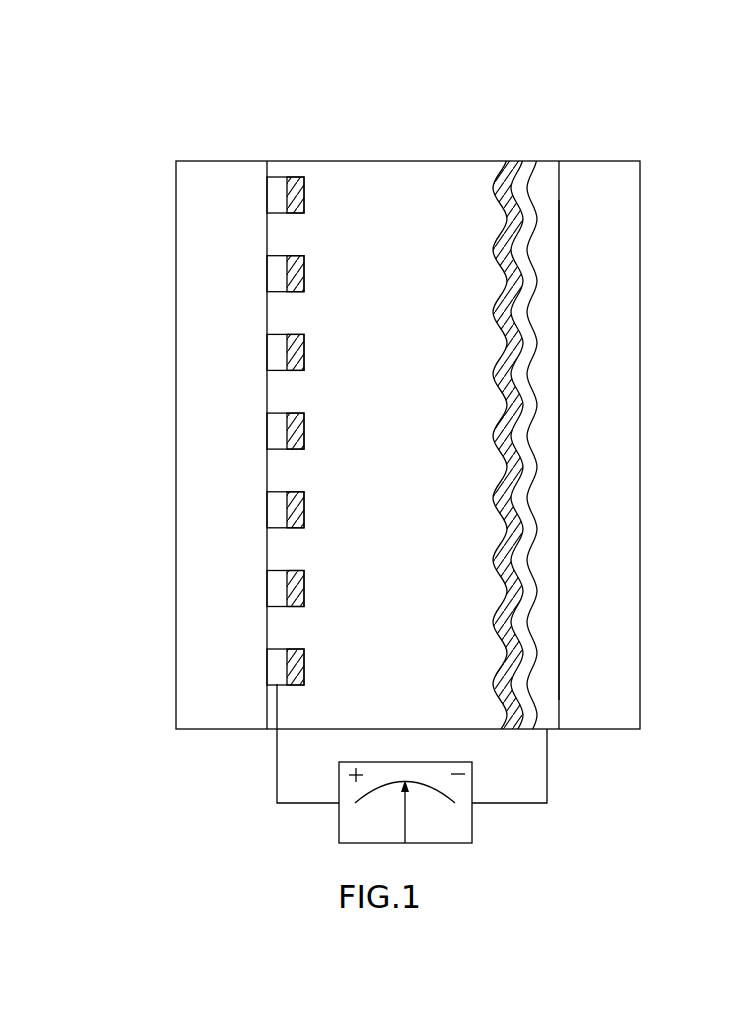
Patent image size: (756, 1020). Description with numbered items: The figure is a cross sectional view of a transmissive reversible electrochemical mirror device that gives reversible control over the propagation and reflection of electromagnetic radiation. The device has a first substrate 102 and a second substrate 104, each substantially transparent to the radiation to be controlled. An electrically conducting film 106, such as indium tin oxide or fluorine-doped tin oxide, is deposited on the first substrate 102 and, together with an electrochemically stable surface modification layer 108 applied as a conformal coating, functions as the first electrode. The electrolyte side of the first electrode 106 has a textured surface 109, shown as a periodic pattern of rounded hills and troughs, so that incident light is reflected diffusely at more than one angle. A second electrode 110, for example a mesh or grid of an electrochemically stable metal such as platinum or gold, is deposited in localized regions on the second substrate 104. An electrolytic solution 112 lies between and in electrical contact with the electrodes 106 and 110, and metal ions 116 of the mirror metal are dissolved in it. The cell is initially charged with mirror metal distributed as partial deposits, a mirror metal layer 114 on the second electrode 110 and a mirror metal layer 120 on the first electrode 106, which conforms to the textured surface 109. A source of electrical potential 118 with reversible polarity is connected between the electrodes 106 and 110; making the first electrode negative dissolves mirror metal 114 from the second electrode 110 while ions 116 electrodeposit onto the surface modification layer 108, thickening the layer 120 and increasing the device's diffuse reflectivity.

The first substrate 102 is at (608, 208).
The second substrate 104 is at (205, 270).
The electrically conducting film 106 is at (547, 170).
The surface modification layer 108 is at (532, 167).
The textured surface 109 is at (543, 364).
The second electrode 110 is at (279, 192).
The electrolytic solution 112 is at (410, 193).
The mirror metal layer 114 is at (298, 178).
The metal ions 116 is at (435, 297).
The source of electrical potential 118 is at (338, 832).
The mirror metal layer 120 is at (517, 163).